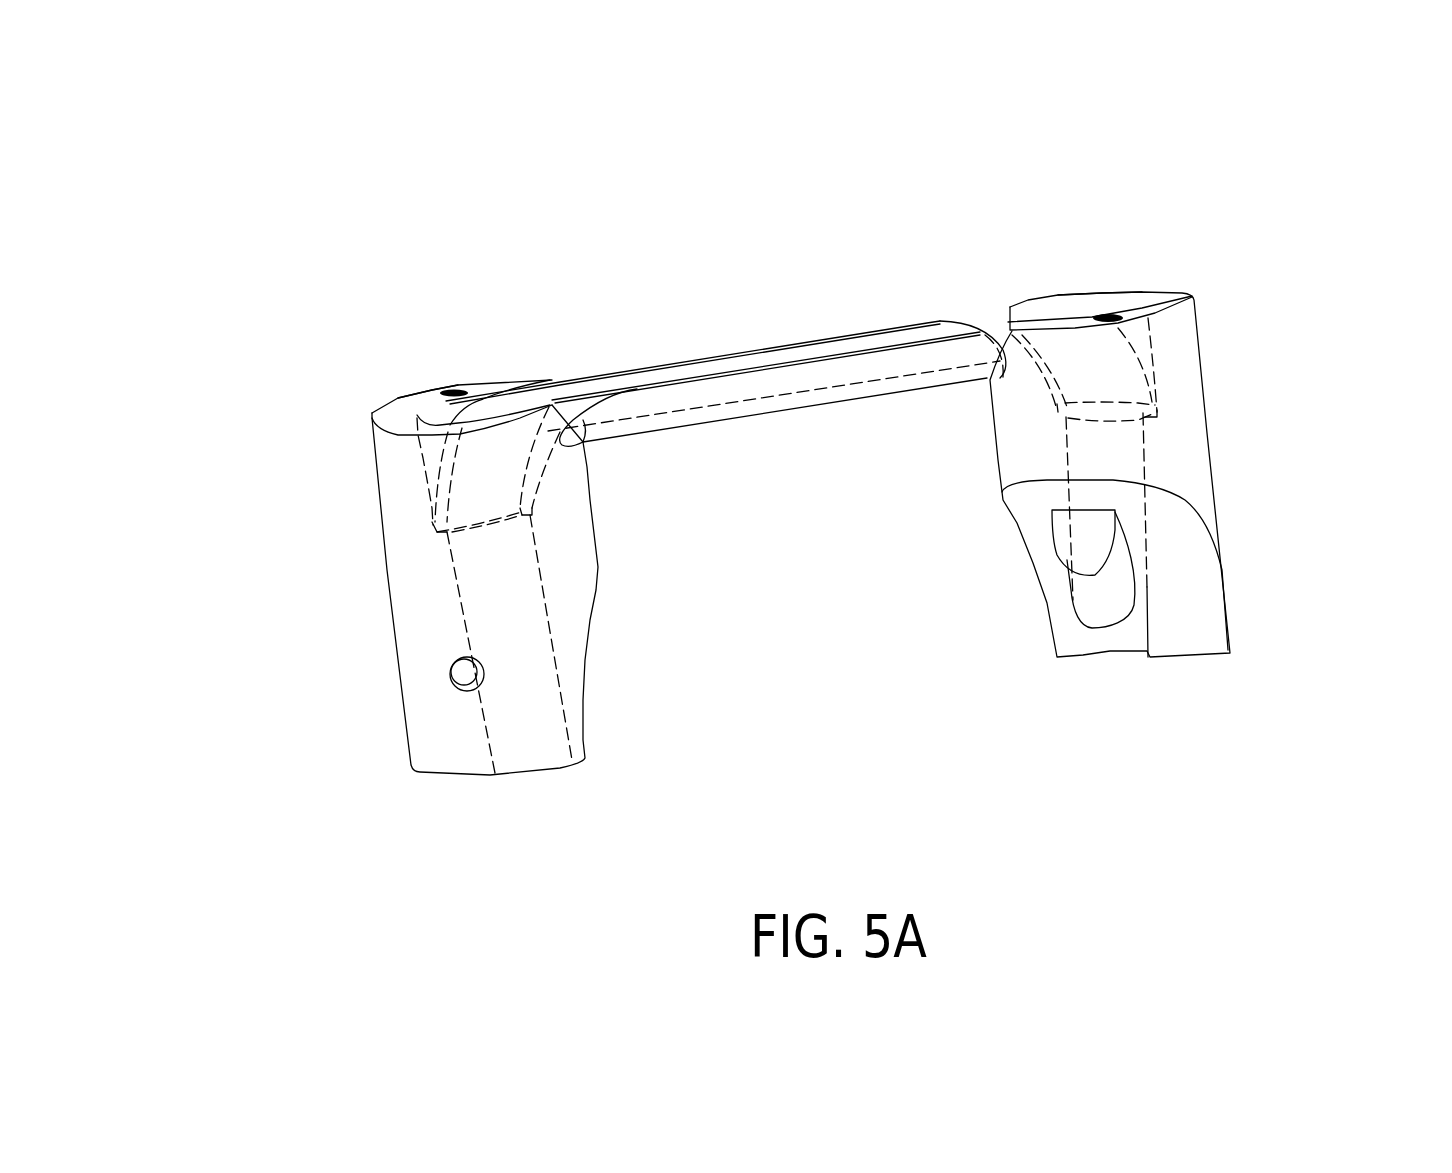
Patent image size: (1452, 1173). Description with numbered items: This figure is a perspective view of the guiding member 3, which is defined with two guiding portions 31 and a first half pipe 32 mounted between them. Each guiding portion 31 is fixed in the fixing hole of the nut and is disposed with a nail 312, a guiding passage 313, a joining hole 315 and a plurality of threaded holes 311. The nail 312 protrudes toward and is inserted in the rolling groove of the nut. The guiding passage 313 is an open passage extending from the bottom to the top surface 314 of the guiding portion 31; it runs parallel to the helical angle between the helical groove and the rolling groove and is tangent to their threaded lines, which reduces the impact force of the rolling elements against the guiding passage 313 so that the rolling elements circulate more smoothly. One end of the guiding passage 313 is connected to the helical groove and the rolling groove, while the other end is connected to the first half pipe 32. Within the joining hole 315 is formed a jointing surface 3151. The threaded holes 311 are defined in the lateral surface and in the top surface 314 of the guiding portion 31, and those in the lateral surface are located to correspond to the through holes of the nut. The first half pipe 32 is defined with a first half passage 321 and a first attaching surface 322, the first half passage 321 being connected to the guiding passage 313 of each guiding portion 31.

The guiding member 3 is at (313, 215).
The guiding portion 31 is at (437, 735).
The threaded hole 311 is at (458, 383).
The nail 312 is at (1098, 597).
The guiding passage 313 is at (487, 717).
The top surface 314 is at (398, 410).
The joining hole 315 is at (490, 382).
The jointing surface 3151 is at (442, 533).
The first half pipe 32 is at (786, 420).
The first half passage 321 is at (730, 367).
The first attaching surface 322 is at (897, 347).